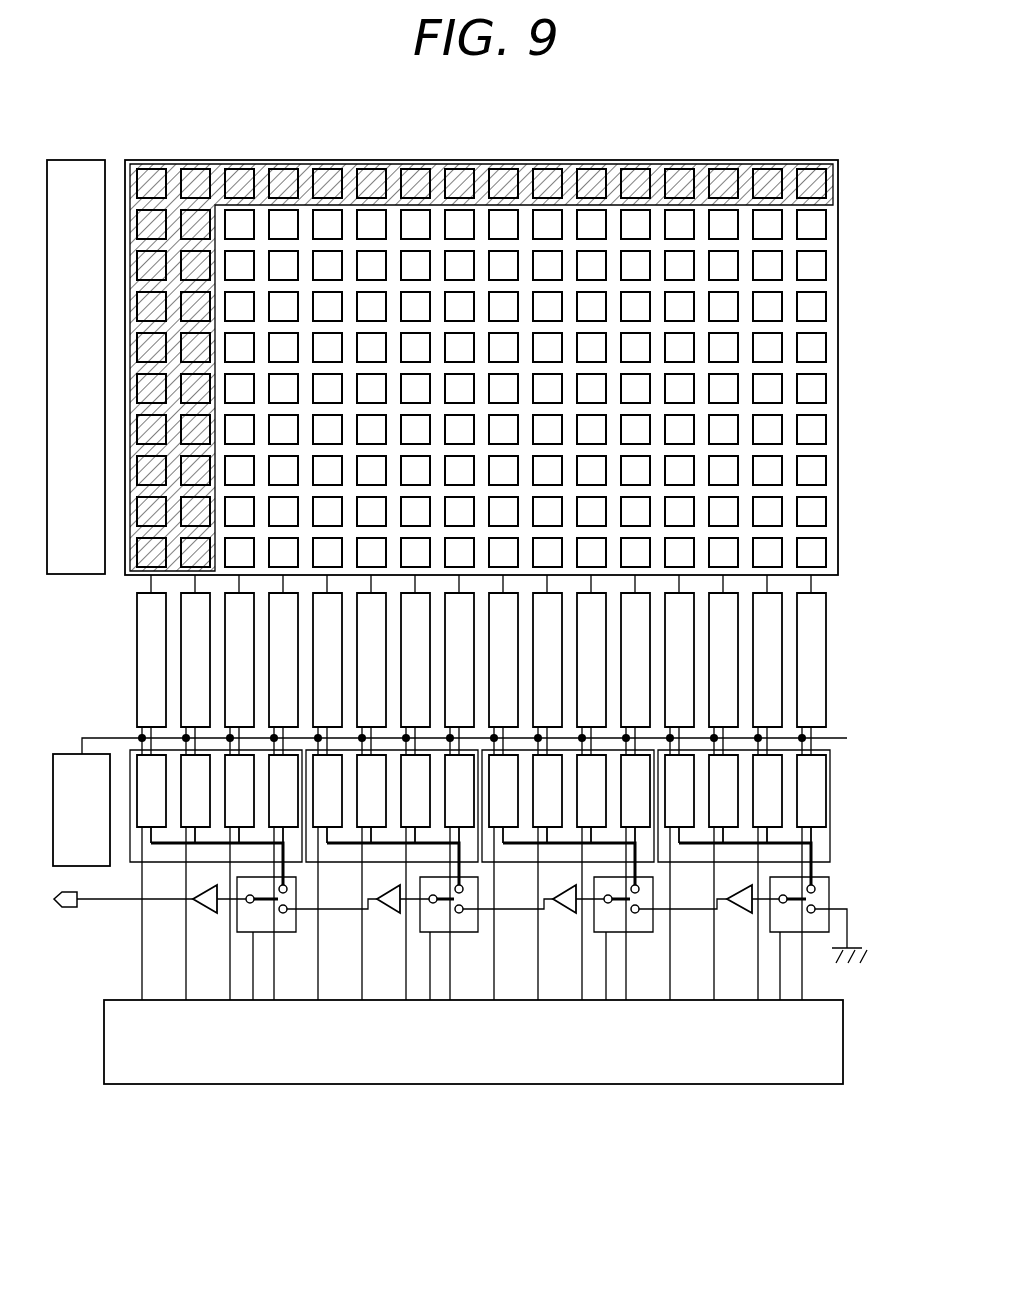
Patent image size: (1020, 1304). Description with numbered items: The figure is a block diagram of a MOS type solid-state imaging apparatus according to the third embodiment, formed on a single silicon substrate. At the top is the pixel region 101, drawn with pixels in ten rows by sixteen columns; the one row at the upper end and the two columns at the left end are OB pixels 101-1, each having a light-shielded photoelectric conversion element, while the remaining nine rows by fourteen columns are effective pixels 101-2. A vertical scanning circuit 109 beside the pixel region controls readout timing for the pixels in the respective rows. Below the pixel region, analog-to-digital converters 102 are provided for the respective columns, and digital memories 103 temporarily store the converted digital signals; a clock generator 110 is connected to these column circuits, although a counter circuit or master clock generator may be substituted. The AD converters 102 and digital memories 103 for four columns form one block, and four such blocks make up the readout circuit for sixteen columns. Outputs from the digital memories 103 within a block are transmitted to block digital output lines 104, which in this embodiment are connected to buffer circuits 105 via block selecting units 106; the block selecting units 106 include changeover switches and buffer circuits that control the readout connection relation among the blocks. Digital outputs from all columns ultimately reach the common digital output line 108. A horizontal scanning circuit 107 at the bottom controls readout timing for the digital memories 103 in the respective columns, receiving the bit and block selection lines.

The pixel region 101 is at (547, 391).
The OB pixels 101-1 is at (570, 164).
The effective pixels 101-2 is at (813, 367).
The analog-to-digital converters 102 is at (136, 613).
The digital memories 103 is at (136, 768).
The block digital output lines 104 is at (165, 862).
The buffer circuits 105 is at (210, 913).
The block selecting units 106 is at (283, 932).
The horizontal scanning circuit 107 is at (383, 1084).
The common digital output line 108 is at (72, 907).
The vertical scanning circuit 109 is at (78, 160).
The clock generator 110 is at (68, 754).